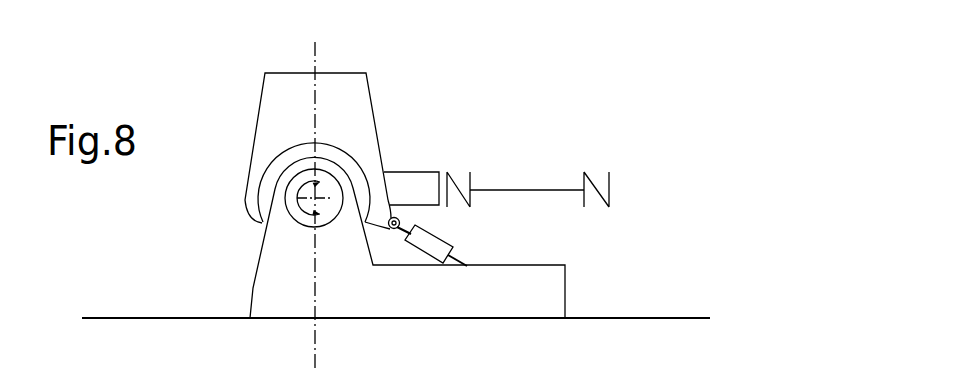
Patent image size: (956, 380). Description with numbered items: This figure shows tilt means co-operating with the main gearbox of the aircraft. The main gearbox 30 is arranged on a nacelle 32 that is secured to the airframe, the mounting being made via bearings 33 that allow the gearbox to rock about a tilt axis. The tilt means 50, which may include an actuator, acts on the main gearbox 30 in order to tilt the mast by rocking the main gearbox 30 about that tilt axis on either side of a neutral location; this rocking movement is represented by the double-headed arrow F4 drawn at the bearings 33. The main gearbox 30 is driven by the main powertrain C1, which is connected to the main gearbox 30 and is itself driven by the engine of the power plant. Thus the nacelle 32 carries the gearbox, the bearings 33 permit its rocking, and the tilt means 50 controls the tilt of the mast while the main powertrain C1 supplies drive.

The main gearbox 30 is at (398, 99).
The nacelle 32 is at (240, 265).
The bearings 33 is at (268, 173).
The tilt means 50 is at (452, 237).
The main powertrain C1 is at (522, 163).
The double-headed arrow F4 is at (296, 221).